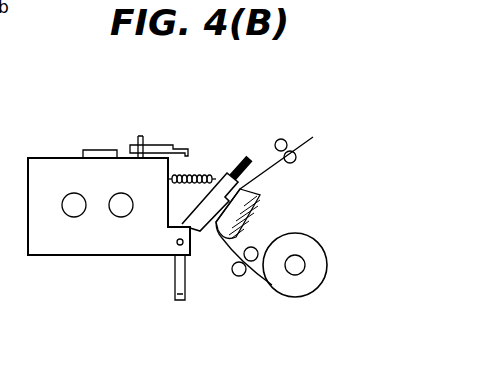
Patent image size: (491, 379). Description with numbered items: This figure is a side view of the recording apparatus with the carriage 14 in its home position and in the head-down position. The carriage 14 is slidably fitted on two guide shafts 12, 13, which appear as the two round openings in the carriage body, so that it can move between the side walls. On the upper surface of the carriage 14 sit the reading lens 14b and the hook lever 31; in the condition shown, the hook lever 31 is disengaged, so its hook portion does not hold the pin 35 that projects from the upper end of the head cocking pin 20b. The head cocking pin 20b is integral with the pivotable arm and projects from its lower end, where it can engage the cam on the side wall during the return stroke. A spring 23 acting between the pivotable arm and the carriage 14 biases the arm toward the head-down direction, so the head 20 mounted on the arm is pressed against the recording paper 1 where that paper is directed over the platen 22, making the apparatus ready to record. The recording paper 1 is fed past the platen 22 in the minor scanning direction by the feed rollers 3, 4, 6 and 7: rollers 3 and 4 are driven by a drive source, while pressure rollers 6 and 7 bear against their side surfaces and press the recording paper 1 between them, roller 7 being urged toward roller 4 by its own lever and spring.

The recording paper 1 is at (270, 168).
The roller 3 is at (252, 262).
The roller 4 is at (296, 157).
The pressure roller 6 is at (239, 277).
The pressure roller 7 is at (284, 140).
The guide shaft 12 is at (72, 212).
The guide shaft 13 is at (118, 212).
The carriage 14 is at (128, 256).
The reading lens 14b is at (99, 150).
The head 20 is at (220, 200).
The head cocking pin 20b is at (182, 302).
The platen 22 is at (261, 203).
The spring 23 is at (193, 175).
The hook lever 31 is at (168, 145).
The pin 35 is at (248, 158).